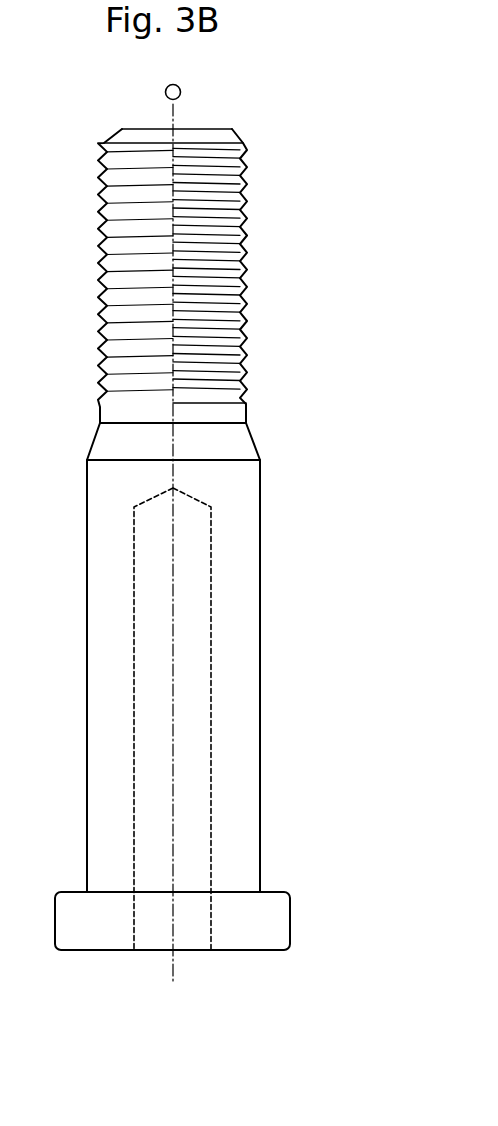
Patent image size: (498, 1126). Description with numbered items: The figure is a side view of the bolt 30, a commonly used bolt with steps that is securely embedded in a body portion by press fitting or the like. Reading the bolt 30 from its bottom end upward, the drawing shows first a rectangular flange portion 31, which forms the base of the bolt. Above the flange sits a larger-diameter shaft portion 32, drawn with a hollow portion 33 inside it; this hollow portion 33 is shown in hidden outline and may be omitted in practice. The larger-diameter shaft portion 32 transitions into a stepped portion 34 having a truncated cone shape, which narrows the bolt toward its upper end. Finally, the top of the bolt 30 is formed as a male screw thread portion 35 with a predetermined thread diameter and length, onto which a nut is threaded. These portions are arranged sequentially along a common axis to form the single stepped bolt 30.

The bolt 30 is at (217, 534).
The rectangular flange portion 31 is at (270, 913).
The larger-diameter shaft portion 32 is at (242, 723).
The hollow portion 33 is at (205, 667).
The stepped portion 34 is at (240, 447).
The male screw thread portion 35 is at (245, 295).